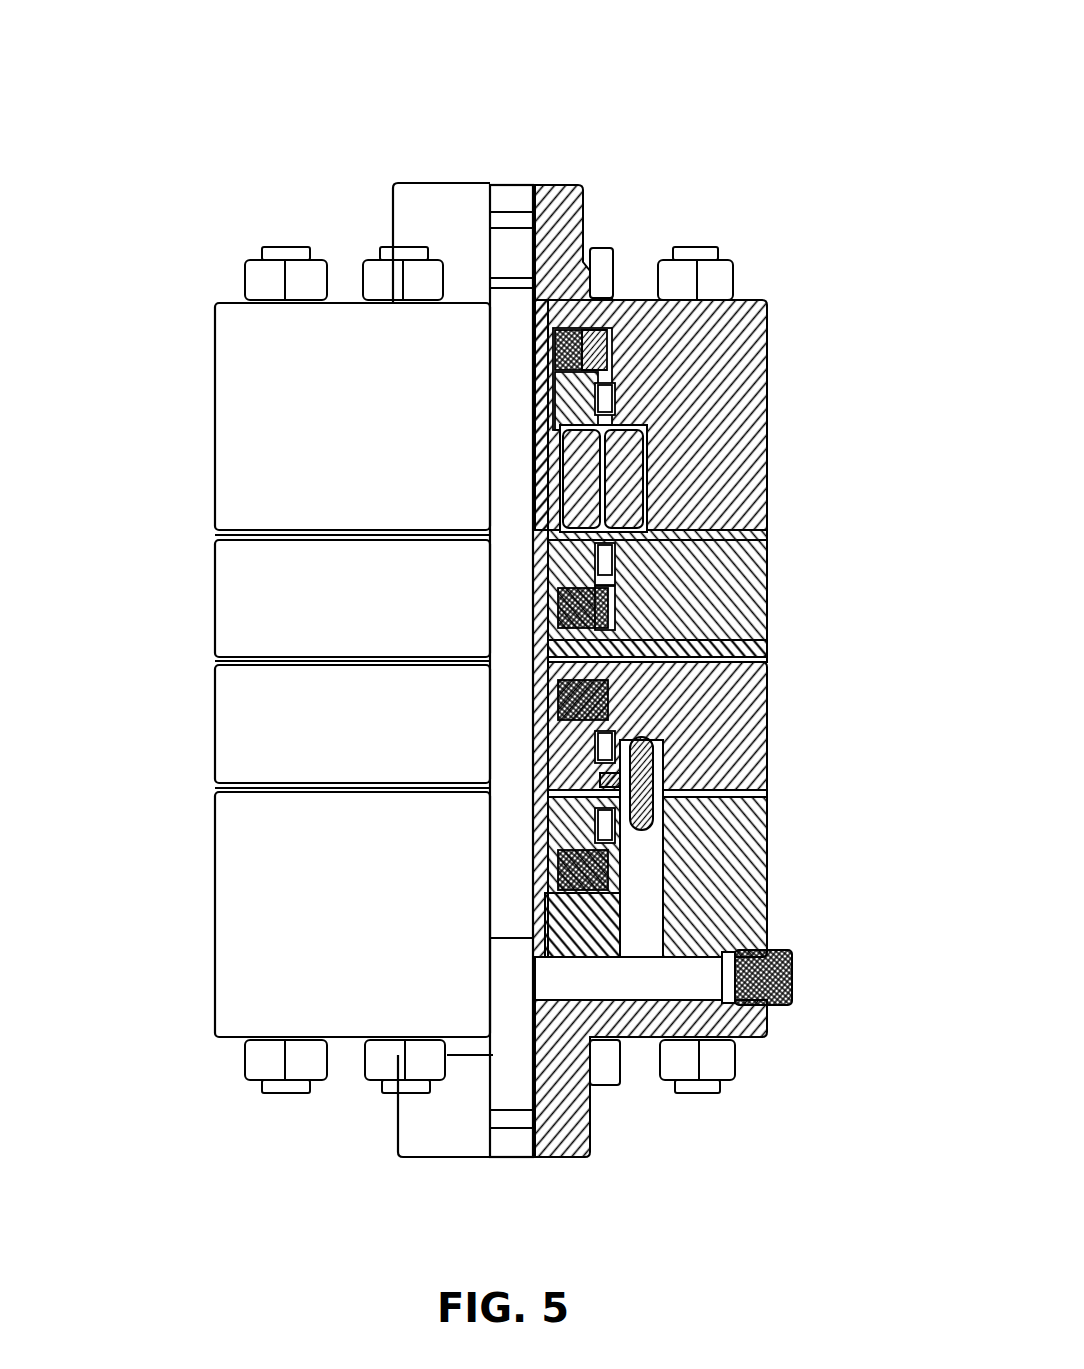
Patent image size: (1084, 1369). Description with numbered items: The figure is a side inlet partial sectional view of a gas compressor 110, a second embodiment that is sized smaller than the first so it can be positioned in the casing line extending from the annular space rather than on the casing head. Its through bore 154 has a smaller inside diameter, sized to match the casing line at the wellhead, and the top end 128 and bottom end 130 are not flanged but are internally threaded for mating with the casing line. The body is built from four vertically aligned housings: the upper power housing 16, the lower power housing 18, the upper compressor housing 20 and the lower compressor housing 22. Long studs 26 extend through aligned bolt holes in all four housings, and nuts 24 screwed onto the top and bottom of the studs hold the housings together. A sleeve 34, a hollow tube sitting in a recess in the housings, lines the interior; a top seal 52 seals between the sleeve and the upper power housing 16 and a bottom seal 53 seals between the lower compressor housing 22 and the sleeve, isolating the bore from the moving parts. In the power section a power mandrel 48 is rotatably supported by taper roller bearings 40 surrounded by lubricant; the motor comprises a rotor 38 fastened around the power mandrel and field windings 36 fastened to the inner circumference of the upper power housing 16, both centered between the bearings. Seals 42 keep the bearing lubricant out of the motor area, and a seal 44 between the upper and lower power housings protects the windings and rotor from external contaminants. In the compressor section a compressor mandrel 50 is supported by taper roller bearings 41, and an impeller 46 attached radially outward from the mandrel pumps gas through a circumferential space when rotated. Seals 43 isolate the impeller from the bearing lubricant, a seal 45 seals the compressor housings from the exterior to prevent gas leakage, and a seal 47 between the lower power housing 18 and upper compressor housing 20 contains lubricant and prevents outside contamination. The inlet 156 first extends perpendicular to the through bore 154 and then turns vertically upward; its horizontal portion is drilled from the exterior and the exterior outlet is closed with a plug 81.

The gas compressor 110 is at (158, 98).
The top end 128 is at (452, 183).
The bottom end 130 is at (455, 1157).
The through bore 154 is at (495, 182).
The long studs 26 is at (700, 247).
The nuts 24 is at (722, 277).
The top seal 52 is at (547, 308).
The taper roller bearings 40 is at (580, 350).
The power mandrel 48 is at (595, 378).
The seals 42 is at (603, 400).
The upper power housing 16 is at (745, 425).
The field windings 36 is at (583, 462).
The rotor 38 is at (620, 490).
The seal 44 is at (553, 532).
The lower power housing 18 is at (750, 585).
The sleeve 34 is at (560, 645).
The seal 47 is at (560, 662).
The upper compressor housing 20 is at (745, 700).
The taper roller bearings 41 is at (585, 725).
The seals 43 is at (603, 753).
The seal 45 is at (610, 786).
The impeller 46 is at (640, 815).
The compressor mandrel 50 is at (552, 873).
The lower compressor housing 22 is at (745, 900).
The bottom seal 53 is at (765, 962).
The plug 81 is at (760, 988).
The inlet 156 is at (690, 985).